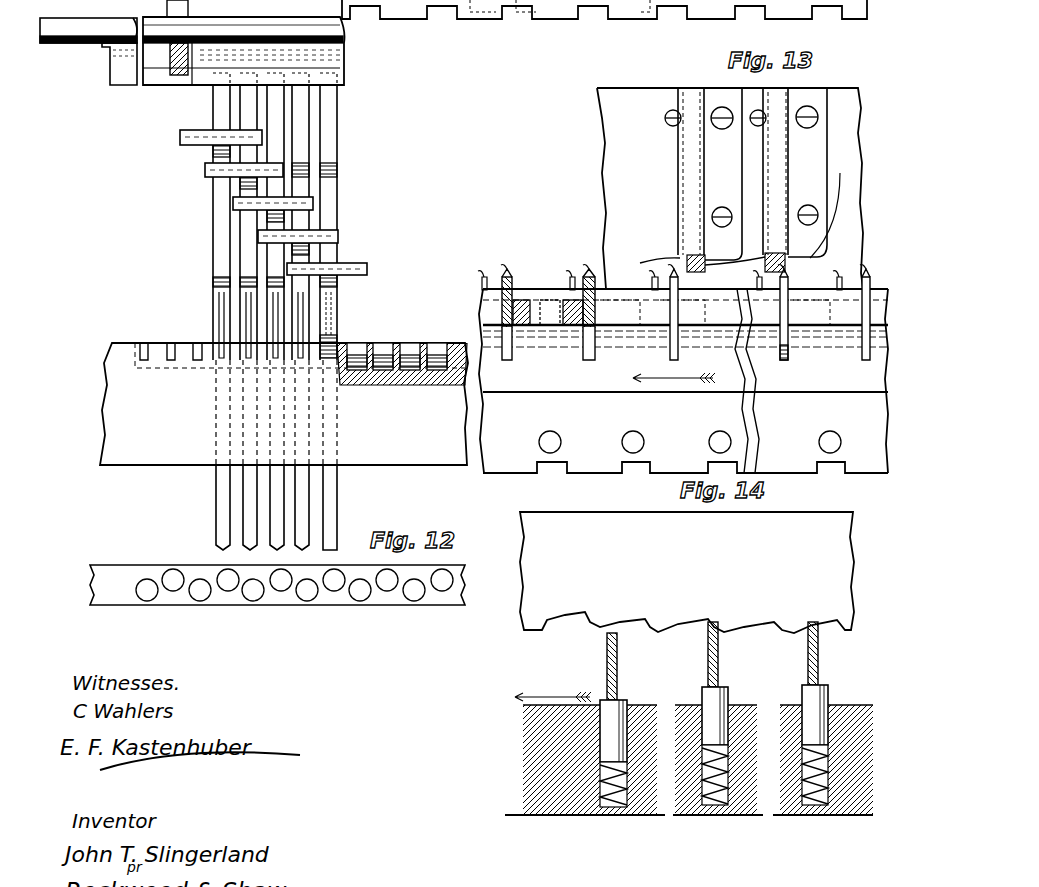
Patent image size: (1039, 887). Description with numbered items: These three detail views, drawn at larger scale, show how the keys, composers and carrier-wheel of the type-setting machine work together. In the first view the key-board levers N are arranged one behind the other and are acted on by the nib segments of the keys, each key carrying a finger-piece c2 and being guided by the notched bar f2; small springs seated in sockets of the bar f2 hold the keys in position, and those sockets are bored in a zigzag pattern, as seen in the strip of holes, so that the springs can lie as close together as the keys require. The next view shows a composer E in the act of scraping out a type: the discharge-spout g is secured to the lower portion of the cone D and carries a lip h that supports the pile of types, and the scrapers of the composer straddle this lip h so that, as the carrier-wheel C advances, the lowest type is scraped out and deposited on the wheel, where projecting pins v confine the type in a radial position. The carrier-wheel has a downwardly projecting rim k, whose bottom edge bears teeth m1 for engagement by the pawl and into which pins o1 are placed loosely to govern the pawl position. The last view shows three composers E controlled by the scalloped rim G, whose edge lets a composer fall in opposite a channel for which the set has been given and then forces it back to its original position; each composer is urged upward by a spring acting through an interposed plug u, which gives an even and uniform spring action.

In FIG. 12, the key-board levers N is at (192, 42).
In FIG. 12, the discharge-spout g is at (250, 44).
In FIG. 13, the discharge-spout g is at (746, 174).
In FIG. 12, the jacks L is at (272, 311).
In FIG. 12, the finger-piece c2 is at (269, 202).
In FIG. 12, the notched bar f2 is at (279, 474).
In FIG. 13, the teeth m1 is at (615, 236).
In FIG. 13, the cone D is at (730, 182).
In FIG. 13, the lip h is at (788, 259).
In FIG. 13, the carrier-wheel C is at (656, 342).
In FIG. 14, the carrier-wheel C is at (767, 686).
In FIG. 13, the rim k is at (685, 413).
In FIG. 14, the rim k is at (689, 760).
In FIG. 13, the pins o1 is at (690, 437).
In FIG. 13, the composers E is at (684, 314).
In FIG. 14, the composers E is at (713, 661).
In FIG. 13, the hooks w is at (684, 272).
In FIG. 13, the projecting pins v is at (658, 275).
In FIG. 14, the scalloped rim G is at (687, 572).
In FIG. 14, the plug u is at (714, 746).